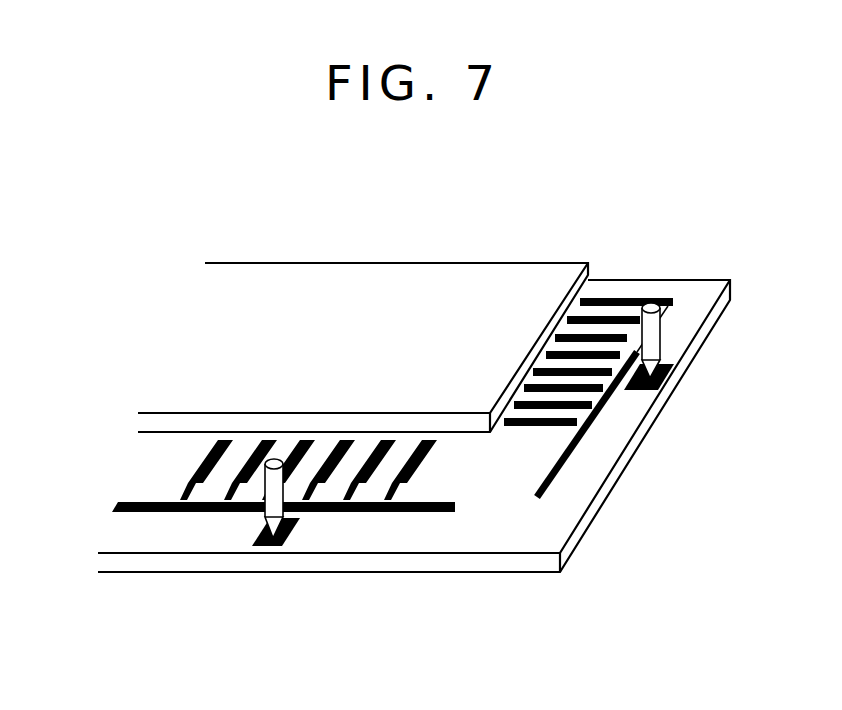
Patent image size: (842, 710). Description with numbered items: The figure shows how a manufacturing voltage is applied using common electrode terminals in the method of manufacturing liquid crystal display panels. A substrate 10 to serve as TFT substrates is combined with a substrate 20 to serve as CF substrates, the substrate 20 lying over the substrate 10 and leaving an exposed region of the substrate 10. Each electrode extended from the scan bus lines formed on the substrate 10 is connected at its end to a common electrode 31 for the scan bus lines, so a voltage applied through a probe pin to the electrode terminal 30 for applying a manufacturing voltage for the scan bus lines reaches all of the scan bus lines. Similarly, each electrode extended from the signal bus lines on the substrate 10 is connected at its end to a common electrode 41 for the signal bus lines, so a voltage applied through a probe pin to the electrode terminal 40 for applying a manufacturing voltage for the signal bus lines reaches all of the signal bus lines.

The substrate to serve as TFT substrates 10 is at (497, 577).
The substrate to serve as CF substrates 20 is at (361, 256).
The electrode terminal for applying a manufacturing voltage for the scan bus lines 30 is at (672, 368).
The common electrode for the scan bus lines 31 is at (547, 470).
The electrode terminal for applying a manufacturing voltage for the signal bus lines 40 is at (258, 538).
The common electrode for the signal bus lines 41 is at (135, 503).